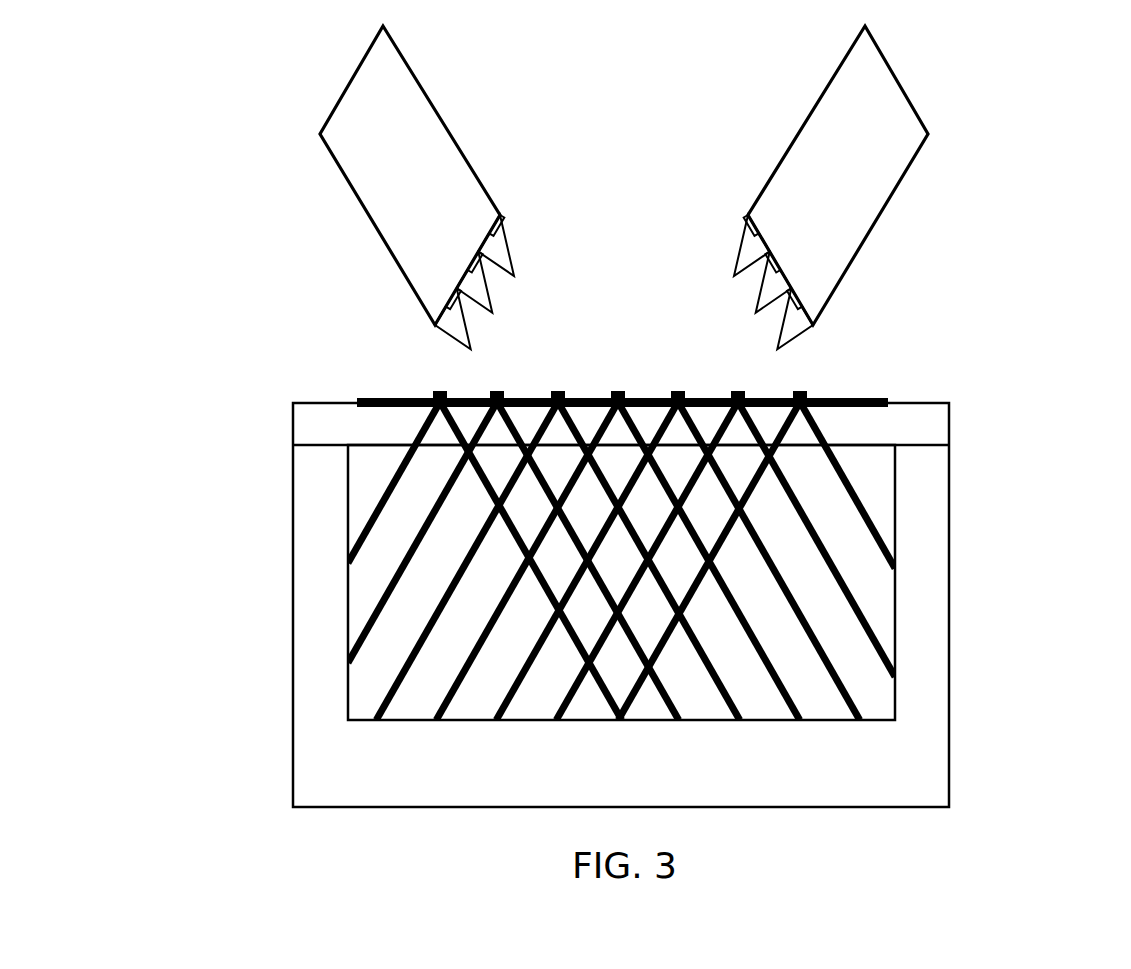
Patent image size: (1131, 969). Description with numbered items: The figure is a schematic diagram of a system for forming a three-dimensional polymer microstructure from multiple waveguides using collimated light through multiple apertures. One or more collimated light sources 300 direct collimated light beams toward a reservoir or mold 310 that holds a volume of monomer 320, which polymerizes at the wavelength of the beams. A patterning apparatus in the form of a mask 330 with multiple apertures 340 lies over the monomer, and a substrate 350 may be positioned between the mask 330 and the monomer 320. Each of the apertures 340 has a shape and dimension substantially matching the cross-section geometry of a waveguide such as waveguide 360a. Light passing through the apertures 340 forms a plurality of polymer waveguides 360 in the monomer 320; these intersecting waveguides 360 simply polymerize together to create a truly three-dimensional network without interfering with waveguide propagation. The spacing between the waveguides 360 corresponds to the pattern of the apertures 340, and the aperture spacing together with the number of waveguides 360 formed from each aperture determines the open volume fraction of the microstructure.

The collimated light sources 300 is at (768, 155).
The reservoir (mold) 310 is at (332, 740).
The monomer 320 is at (872, 597).
The mask 330 is at (362, 377).
The apertures 340 is at (800, 387).
The substrate 350 is at (933, 397).
The polymer waveguides 360 is at (370, 607).
The waveguide 360a is at (882, 532).